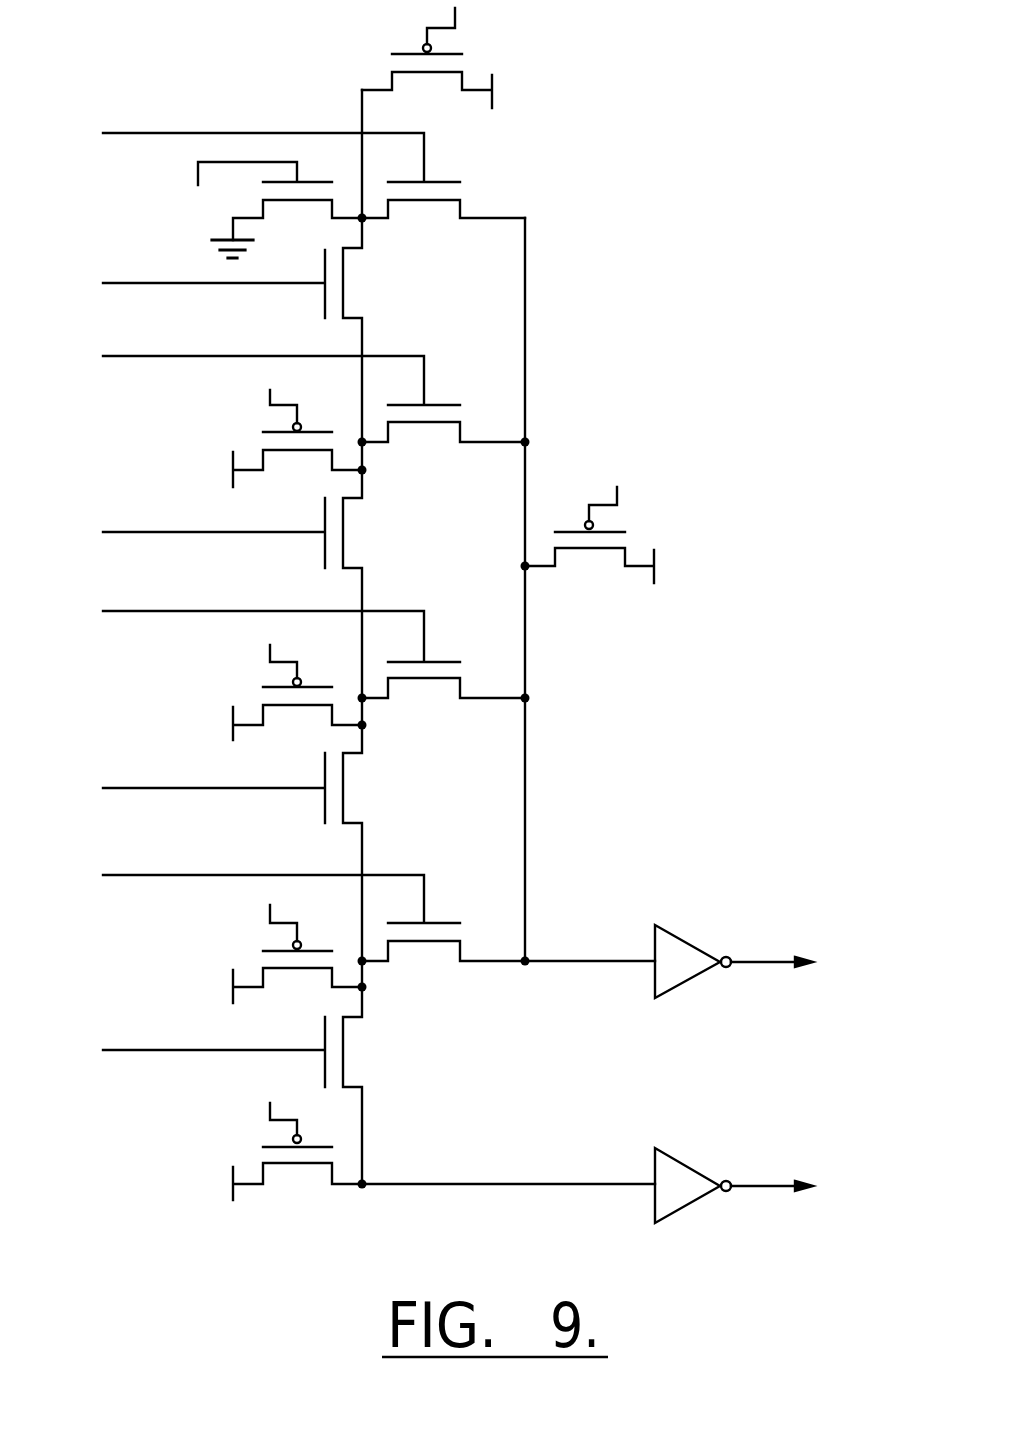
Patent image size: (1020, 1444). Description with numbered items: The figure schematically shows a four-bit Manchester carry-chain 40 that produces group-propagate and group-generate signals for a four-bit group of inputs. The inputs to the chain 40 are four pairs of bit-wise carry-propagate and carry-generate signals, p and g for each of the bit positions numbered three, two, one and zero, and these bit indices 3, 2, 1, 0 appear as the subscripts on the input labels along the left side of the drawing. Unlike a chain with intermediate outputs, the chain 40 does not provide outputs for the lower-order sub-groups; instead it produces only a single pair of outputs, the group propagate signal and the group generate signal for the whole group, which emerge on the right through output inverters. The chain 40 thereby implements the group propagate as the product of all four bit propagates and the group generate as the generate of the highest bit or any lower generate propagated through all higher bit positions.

The 4-bit Manchester carry-chain 40 is at (475, 612).
The bit-slice stage 3 (g3/p3 transistors) 3 is at (295, 211).
The bit-slice stage 2 (g2/p2 transistors) 2 is at (295, 445).
The bit-slice stage 1 (g1/p1 transistors) 1 is at (295, 701).
The bit-slice stage 0 (g0/p0 transistors) 0 is at (295, 966).